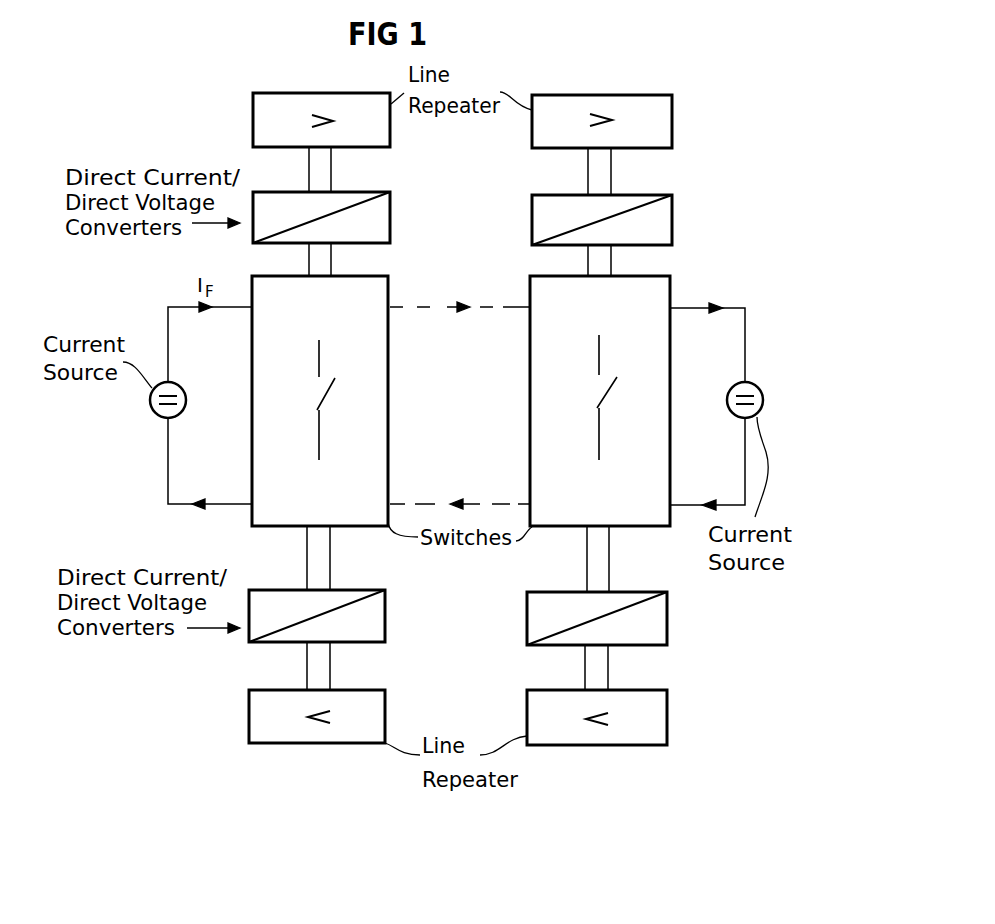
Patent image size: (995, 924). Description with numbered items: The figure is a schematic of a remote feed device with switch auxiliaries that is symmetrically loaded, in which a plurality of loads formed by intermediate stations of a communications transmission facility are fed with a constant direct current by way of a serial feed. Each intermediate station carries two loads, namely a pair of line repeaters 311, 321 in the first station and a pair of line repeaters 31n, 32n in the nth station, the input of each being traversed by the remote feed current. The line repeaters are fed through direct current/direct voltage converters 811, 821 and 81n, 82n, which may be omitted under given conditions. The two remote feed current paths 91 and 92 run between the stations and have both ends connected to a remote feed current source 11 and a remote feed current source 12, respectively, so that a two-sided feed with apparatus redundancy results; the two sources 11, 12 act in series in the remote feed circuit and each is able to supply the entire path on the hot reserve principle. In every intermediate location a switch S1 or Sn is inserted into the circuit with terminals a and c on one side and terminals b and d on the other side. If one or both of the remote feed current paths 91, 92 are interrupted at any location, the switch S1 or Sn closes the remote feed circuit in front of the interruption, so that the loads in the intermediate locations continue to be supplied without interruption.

The line repeater 311 is at (321, 104).
The line repeater 31n is at (602, 106).
The direct current/direct voltage converter 811 is at (341, 217).
The direct current/direct voltage converter 81n is at (618, 220).
The switch S1 is at (372, 441).
The switch Sn is at (652, 440).
The remote feed current source 11 is at (157, 418).
The remote feed current source 12 is at (728, 398).
The remote feed current path 91 is at (426, 309).
The remote feed current path 92 is at (420, 503).
The direct current/direct voltage converter 821 is at (337, 616).
The direct current/direct voltage converter 82n is at (615, 618).
The line repeater 321 is at (317, 734).
The line repeater 32n is at (597, 736).